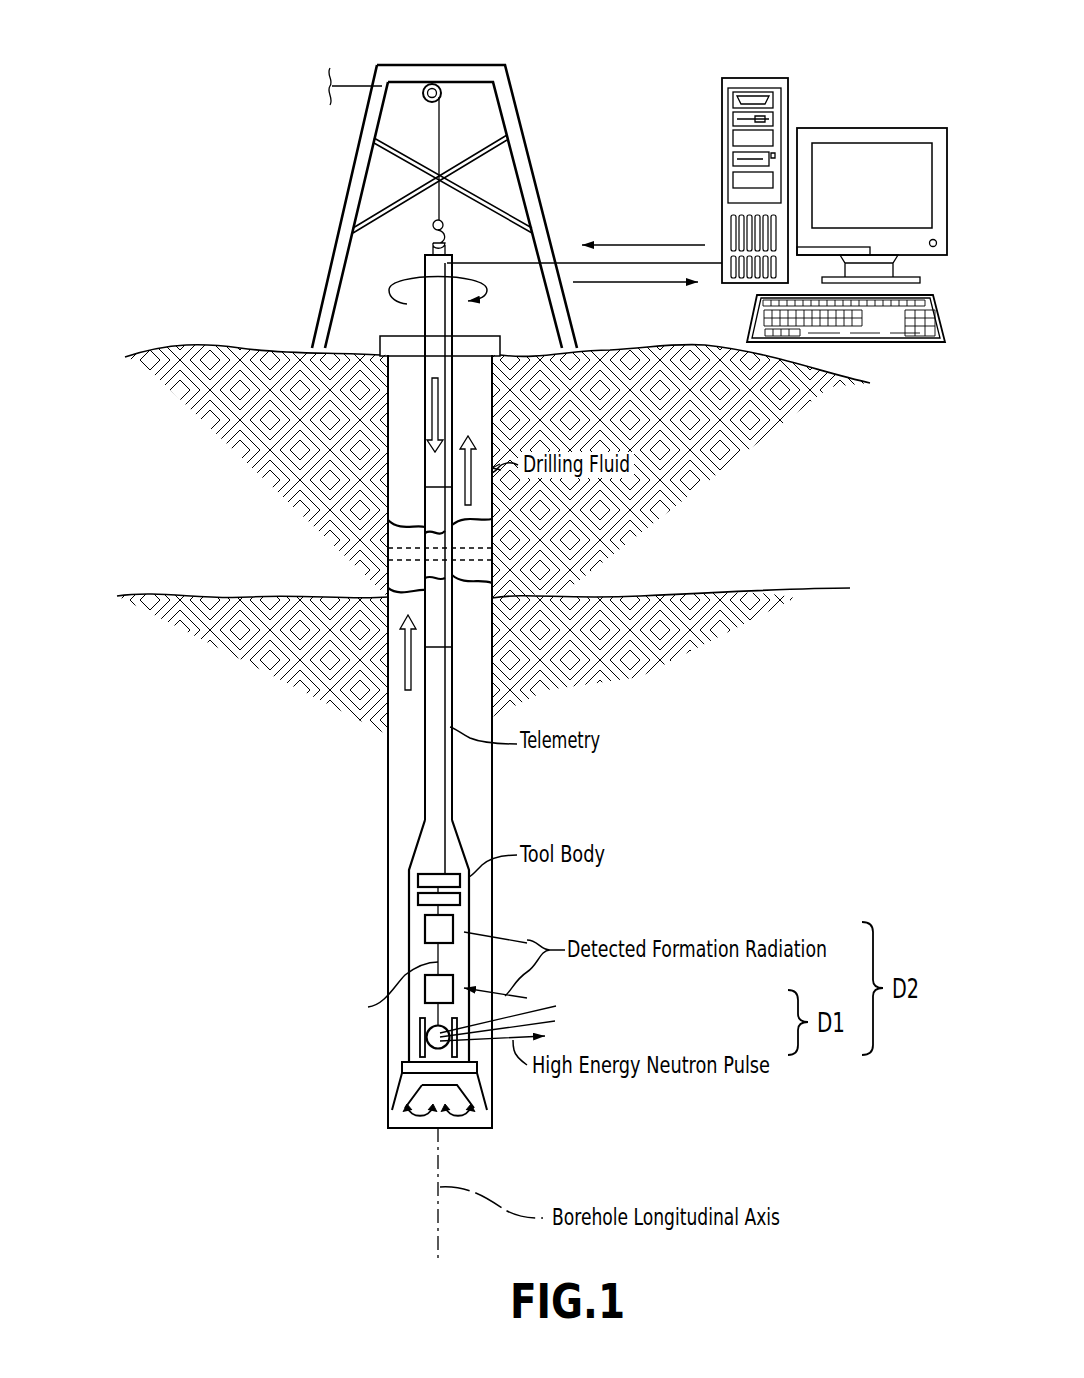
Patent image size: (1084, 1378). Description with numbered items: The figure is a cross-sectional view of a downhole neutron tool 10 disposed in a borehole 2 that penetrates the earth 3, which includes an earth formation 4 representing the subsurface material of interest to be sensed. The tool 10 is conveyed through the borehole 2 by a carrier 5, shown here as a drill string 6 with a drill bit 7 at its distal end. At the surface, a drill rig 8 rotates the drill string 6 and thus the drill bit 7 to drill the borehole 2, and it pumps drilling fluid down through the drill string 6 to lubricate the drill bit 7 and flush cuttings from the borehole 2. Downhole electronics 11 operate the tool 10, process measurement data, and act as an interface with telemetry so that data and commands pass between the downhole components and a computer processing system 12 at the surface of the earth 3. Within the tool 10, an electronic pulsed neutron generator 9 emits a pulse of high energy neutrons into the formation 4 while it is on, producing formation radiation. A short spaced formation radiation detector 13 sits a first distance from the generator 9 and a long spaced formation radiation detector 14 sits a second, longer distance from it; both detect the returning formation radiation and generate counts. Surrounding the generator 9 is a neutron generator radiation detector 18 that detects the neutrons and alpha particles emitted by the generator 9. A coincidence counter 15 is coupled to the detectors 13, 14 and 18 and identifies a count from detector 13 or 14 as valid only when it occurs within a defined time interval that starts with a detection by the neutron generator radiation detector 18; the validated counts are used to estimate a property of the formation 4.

The borehole 2 is at (402, 388).
The earth 3 is at (183, 415).
The earth formation 4 is at (311, 675).
The carrier 5 is at (425, 461).
The drill string 6 is at (425, 780).
The drill bit 7 is at (481, 1095).
The drill rig 8 is at (258, 225).
The electronic pulsed neutron generator 9 is at (451, 1045).
The downhole neutron tool 10 is at (473, 1001).
The downhole electronics 11 is at (419, 880).
The computer processing system 12 is at (780, 38).
The short spaced formation radiation detector 13 is at (425, 997).
The long spaced formation radiation detector 14 is at (426, 929).
The coincidence counter 15 is at (419, 898).
The neutron generator radiation detector 18 is at (420, 1057).